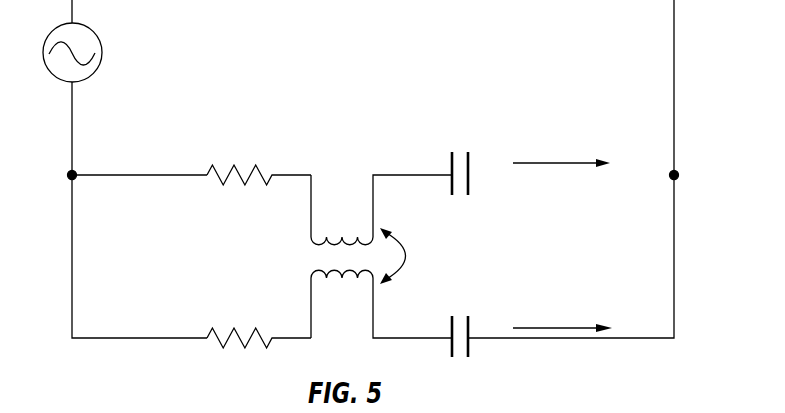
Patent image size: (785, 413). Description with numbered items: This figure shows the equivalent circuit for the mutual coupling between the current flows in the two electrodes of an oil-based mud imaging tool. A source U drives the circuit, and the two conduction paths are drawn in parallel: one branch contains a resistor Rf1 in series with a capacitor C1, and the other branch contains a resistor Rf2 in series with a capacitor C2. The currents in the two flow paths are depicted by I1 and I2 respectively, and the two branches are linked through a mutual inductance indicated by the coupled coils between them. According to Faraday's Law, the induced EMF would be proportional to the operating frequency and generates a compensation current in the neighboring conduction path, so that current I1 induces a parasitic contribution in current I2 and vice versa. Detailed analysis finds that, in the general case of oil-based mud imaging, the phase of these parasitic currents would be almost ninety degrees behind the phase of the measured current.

The voltage source U is at (100, 52).
The first filter resistor Rf1 is at (259, 159).
The second filter resistor Rf2 is at (259, 321).
The first capacitor C1 is at (461, 159).
The second capacitor C2 is at (461, 320).
The current in the first flow path I1 is at (561, 149).
The current in the second flow path I2 is at (562, 313).